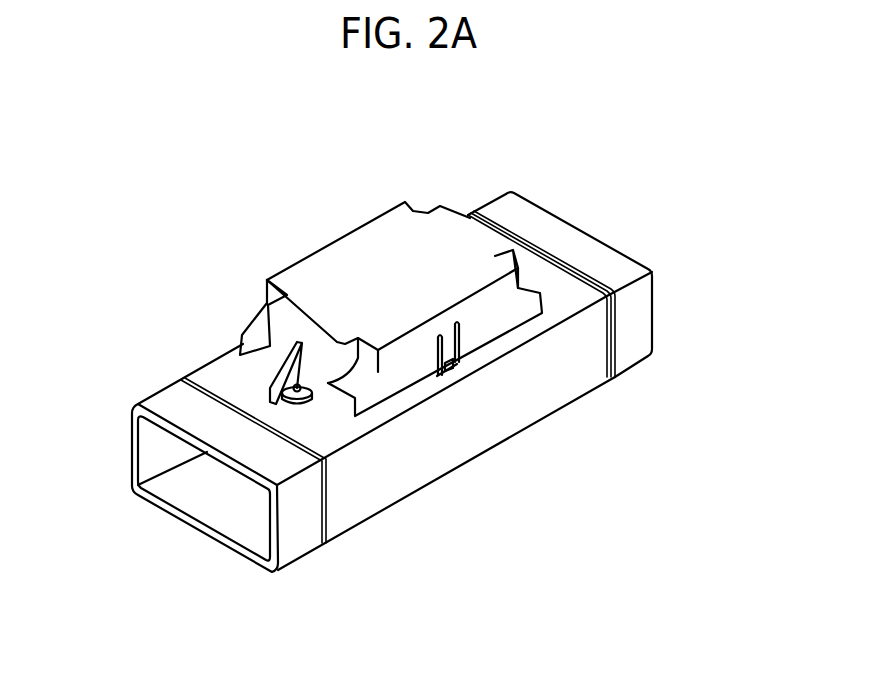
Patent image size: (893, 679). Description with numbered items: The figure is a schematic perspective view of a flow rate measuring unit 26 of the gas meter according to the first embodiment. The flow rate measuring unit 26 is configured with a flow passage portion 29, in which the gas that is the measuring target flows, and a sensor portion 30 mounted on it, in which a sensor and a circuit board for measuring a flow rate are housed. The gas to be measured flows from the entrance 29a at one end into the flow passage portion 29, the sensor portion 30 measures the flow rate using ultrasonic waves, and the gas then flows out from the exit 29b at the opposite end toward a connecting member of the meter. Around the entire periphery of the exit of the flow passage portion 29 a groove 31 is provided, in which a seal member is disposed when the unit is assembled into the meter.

The flow rate measuring unit 26 is at (573, 181).
The flow passage portion 29 is at (457, 440).
The entrance 29a is at (200, 500).
The exit 29b is at (640, 263).
The sensor portion 30 is at (335, 275).
The groove 31 is at (612, 328).